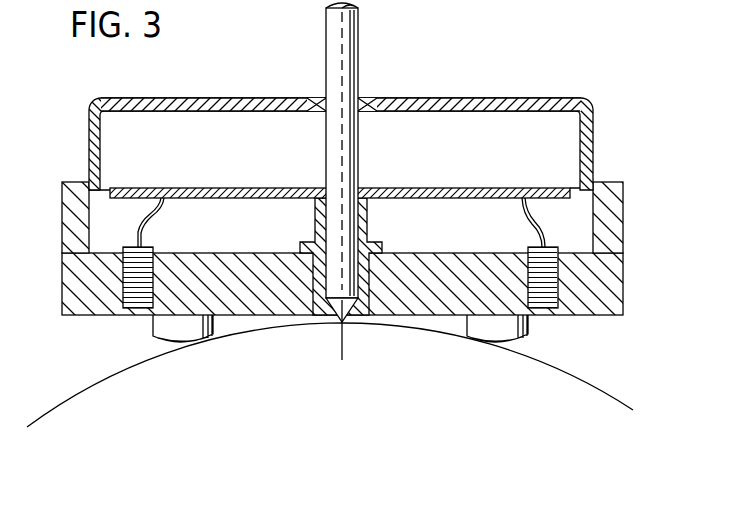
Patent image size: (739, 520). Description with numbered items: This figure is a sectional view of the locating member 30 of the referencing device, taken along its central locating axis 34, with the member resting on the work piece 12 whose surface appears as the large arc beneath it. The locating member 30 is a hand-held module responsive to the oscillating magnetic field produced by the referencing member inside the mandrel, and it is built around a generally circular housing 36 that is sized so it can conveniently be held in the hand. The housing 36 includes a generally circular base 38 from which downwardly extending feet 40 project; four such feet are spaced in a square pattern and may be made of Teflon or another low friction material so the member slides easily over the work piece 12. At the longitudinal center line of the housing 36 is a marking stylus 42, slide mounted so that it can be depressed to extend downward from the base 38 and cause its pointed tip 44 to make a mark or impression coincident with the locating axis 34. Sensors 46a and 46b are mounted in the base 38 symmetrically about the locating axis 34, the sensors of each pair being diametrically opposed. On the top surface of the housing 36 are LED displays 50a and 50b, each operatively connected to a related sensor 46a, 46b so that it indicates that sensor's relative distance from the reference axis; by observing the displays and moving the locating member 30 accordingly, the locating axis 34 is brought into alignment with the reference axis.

The work piece 12 is at (604, 376).
The locating member 30 is at (378, 128).
The locating axis 34 is at (342, 28).
The housing 36 is at (620, 222).
The base 38 is at (620, 265).
The feet 40 is at (155, 332).
The marking stylus 42 is at (348, 63).
The pointed tip 44 is at (345, 326).
The sensor 46a is at (145, 275).
The sensor 46b is at (528, 251).
The LED display 50a is at (240, 98).
The LED display 50b is at (460, 98).